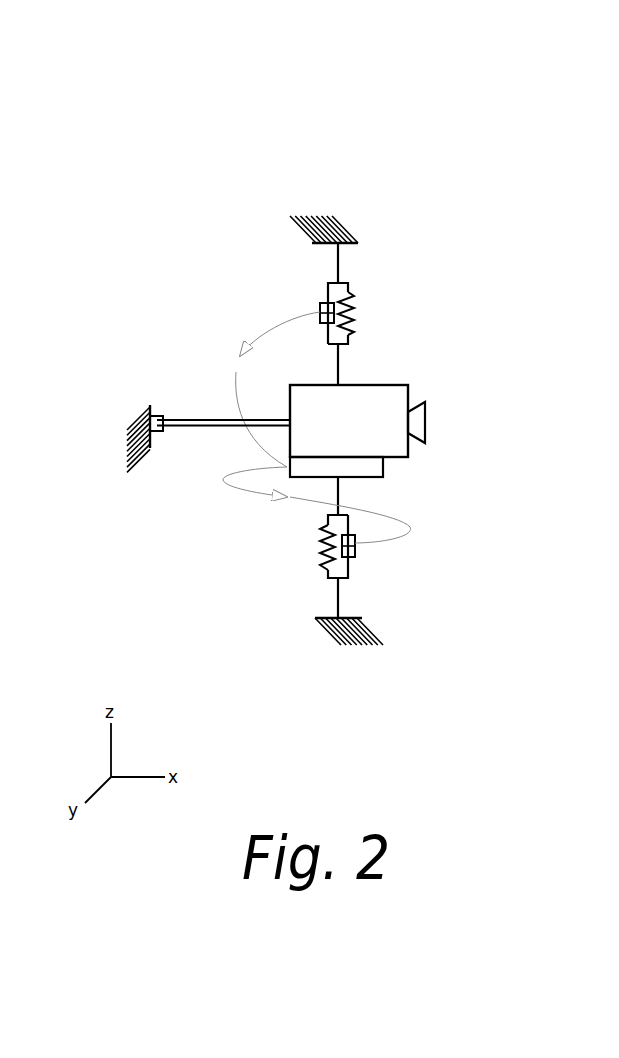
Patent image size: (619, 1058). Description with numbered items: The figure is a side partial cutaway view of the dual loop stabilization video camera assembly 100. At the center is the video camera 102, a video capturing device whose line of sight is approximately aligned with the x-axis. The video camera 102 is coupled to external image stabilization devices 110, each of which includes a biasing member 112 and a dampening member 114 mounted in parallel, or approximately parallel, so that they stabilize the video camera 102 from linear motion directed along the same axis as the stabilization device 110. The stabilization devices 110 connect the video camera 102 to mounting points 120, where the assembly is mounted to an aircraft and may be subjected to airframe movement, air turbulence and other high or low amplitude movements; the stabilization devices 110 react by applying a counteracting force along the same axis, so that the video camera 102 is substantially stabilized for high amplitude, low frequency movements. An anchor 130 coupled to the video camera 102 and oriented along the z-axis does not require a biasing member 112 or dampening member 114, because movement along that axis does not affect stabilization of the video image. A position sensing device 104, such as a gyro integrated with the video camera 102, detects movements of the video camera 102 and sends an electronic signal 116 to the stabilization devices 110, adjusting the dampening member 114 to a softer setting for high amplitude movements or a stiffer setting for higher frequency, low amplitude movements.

The assembly 100 is at (474, 122).
The video camera 102 is at (419, 458).
The position sensing device 104 is at (374, 478).
The external image stabilization device 110 is at (331, 435).
The biasing member 112 is at (358, 317).
The dampening member 114 is at (318, 310).
The electronic signal 116 is at (232, 362).
The mounting points 120 is at (315, 206).
The anchor 130 is at (218, 419).